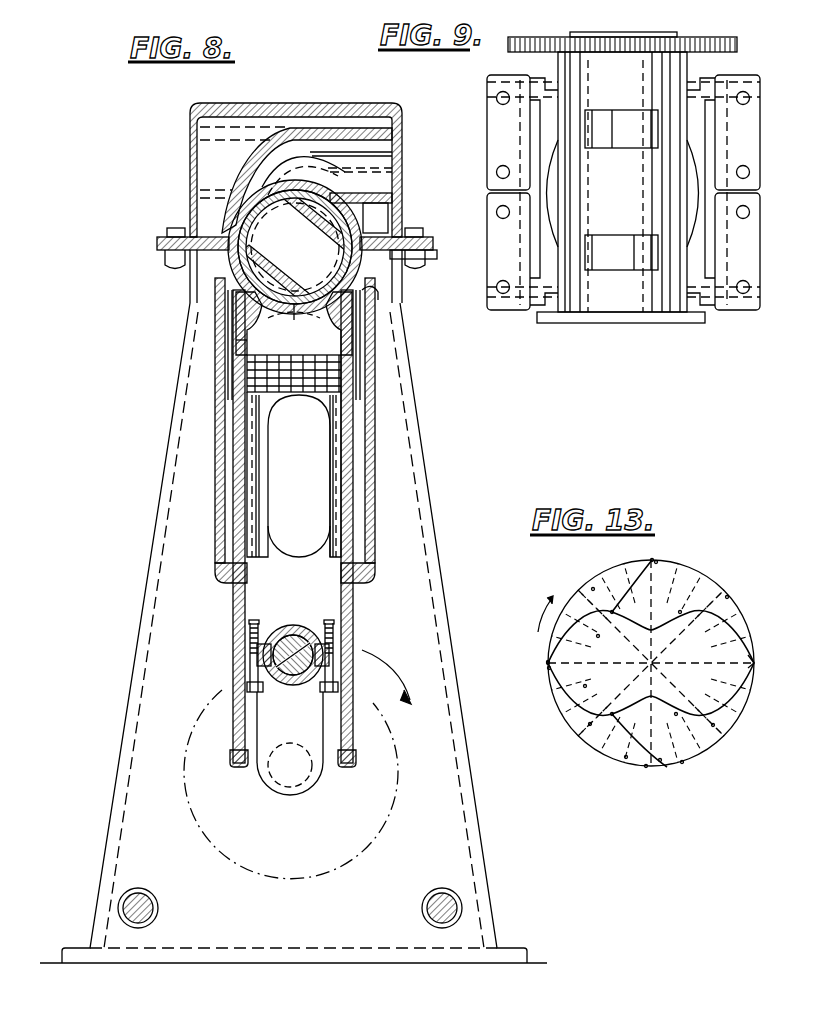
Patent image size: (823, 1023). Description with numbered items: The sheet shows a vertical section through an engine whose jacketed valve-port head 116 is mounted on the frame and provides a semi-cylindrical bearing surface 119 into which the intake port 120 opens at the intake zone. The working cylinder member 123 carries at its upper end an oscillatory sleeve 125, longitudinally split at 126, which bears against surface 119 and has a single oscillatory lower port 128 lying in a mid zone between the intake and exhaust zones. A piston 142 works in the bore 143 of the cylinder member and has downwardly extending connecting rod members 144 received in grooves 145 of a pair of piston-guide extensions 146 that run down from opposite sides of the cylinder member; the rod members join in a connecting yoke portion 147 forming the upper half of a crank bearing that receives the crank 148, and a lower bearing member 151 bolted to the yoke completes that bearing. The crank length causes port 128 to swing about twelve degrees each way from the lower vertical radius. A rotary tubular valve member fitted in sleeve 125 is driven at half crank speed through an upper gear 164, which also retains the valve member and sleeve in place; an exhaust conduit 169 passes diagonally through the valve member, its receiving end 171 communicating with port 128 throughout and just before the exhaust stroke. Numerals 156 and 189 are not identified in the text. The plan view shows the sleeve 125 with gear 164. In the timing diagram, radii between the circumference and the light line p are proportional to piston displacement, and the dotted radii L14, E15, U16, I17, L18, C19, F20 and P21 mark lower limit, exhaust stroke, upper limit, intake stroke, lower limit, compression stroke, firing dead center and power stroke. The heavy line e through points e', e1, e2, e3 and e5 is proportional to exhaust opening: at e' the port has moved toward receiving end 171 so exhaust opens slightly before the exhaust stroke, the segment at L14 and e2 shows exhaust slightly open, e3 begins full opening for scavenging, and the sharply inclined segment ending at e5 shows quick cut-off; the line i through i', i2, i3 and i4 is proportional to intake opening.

In FIG. 8, the jacketed valve-port head 116 is at (297, 104).
In FIG. 8, the semi-cylindrical bearing surface 119 is at (368, 220).
In FIG. 8, the intake port 120 is at (230, 216).
In FIG. 8, the working cylinder member 123 is at (215, 432).
In FIG. 8, the oscillatory sleeve 125 is at (230, 247).
In FIG. 9, the oscillatory sleeve 125 is at (623, 187).
In FIG. 8, the longitudinal split 126 is at (182, 262).
In FIG. 8, the oscillatory lower port 128 is at (294, 321).
In FIG. 8, the piston 142 is at (291, 396).
In FIG. 8, the bore 143 is at (294, 366).
In FIG. 8, the connecting rod members 144 is at (332, 480).
In FIG. 8, the grooves 145 is at (248, 714).
In FIG. 8, the piston-guide extensions 146 is at (238, 642).
In FIG. 8, the connecting yoke portion 147 is at (293, 624).
In FIG. 8, the crank 148 is at (330, 655).
In FIG. 8, the lower bearing member 151 is at (293, 693).
In FIG. 8, the neck 156 is at (236, 300).
In FIG. 9, the upper gear 164 is at (738, 45).
In FIG. 8, the exhaust conduit 169 is at (295, 247).
In FIG. 8, the receiving end 171 is at (352, 288).
In FIG. 8, the port 189 is at (236, 346).
In FIG. 13, the lower-limit radius L18 is at (647, 562).
In FIG. 13, the intake opening point i4 is at (658, 562).
In FIG. 13, the intake-stroke radius I17 is at (592, 588).
In FIG. 13, the compression-stroke radius C19 is at (727, 597).
In FIG. 13, the light line p is at (674, 669).
In FIG. 13, the intake opening point i3 is at (616, 621).
In FIG. 13, the intake opening point i2 is at (598, 643).
In FIG. 13, the intake opening point i' is at (525, 645).
In FIG. 13, the exhaust cut-off point e5 is at (546, 661).
In FIG. 13, the upper-limit radius U16 is at (548, 670).
In FIG. 13, the firing dead-center radius F20 is at (754, 663).
In FIG. 13, the exhaust opening point e1 is at (595, 677).
In FIG. 13, the exhaust full-open point e3 is at (620, 704).
In FIG. 13, the exhaust-stroke radius E15 is at (590, 725).
In FIG. 13, the exhaust slightly-open point e2 is at (664, 751).
In FIG. 13, the power-stroke radius P21 is at (713, 726).
In FIG. 13, the heavy line e is at (612, 778).
In FIG. 13, the lower-limit radius L14 is at (645, 766).
In FIG. 13, the exhaust pre-opening point e' is at (686, 771).